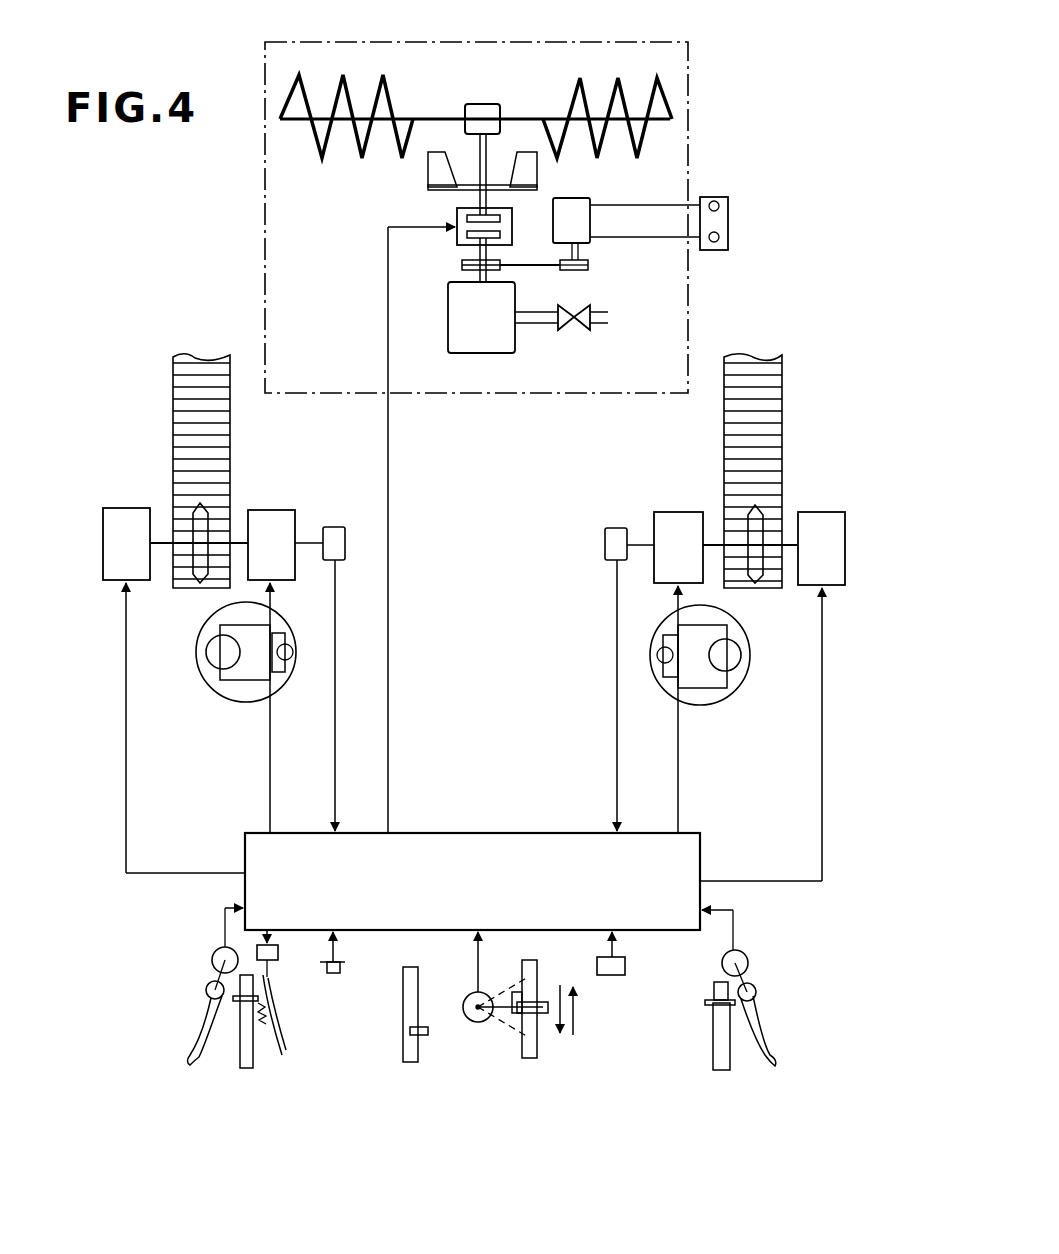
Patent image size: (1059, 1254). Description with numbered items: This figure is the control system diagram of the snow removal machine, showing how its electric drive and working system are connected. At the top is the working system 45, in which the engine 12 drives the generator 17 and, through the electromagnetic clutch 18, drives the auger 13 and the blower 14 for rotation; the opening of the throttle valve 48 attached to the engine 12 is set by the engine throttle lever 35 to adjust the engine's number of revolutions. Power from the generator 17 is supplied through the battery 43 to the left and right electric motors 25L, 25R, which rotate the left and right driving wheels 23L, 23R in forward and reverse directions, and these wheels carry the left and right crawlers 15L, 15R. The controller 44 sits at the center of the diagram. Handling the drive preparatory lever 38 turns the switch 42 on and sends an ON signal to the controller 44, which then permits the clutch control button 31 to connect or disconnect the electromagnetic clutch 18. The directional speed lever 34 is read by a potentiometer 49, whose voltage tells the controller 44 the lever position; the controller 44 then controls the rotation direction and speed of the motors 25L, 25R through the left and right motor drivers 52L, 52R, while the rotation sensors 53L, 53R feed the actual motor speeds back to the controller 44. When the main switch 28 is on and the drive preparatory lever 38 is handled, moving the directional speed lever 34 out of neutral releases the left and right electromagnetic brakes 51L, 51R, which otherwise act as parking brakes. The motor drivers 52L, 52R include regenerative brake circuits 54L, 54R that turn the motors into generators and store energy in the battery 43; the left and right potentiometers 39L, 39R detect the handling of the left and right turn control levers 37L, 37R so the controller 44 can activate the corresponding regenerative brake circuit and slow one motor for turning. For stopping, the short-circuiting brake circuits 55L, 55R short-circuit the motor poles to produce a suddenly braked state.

The engine 12 is at (465, 340).
The auger 13 is at (515, 118).
The blower 14 is at (428, 170).
The left crawler 15L is at (190, 415).
The right crawler 15R is at (760, 423).
The generator 17 is at (585, 228).
The electromagnetic clutch 18 is at (457, 240).
The left driving wheel 23L is at (190, 513).
The right driving wheel 23R is at (757, 520).
The left electric motor 25L is at (266, 510).
The right electric motor 25R is at (670, 512).
The main switch 28 is at (612, 978).
The clutch control button 31 is at (334, 975).
The directional speed lever 34 is at (545, 1018).
The engine throttle lever 35 is at (422, 1040).
The left turn control lever 37L is at (190, 1065).
The right turn control lever 37R is at (775, 1060).
The drive preparatory lever 38 is at (284, 1055).
The left potentiometer 39L is at (212, 955).
The right potentiometer 39R is at (750, 957).
The switch 42 is at (280, 955).
The battery 43 is at (728, 213).
The controller 44 is at (655, 905).
The working system 45 is at (688, 60).
The throttle valve 48 is at (588, 328).
The potentiometer 49 is at (478, 1022).
The left electromagnetic brake 51L is at (116, 530).
The right electromagnetic brake 51R is at (822, 530).
The left motor driver 52L is at (235, 700).
The right motor driver 52R is at (718, 705).
The left rotation sensor 53L is at (330, 527).
The right rotation sensor 53R is at (611, 528).
The left regenerative brake circuit 54L is at (215, 660).
The right regenerative brake circuit 54R is at (728, 663).
The left short-circuiting brake circuit 55L is at (292, 648).
The right short-circuiting brake circuit 55R is at (655, 648).